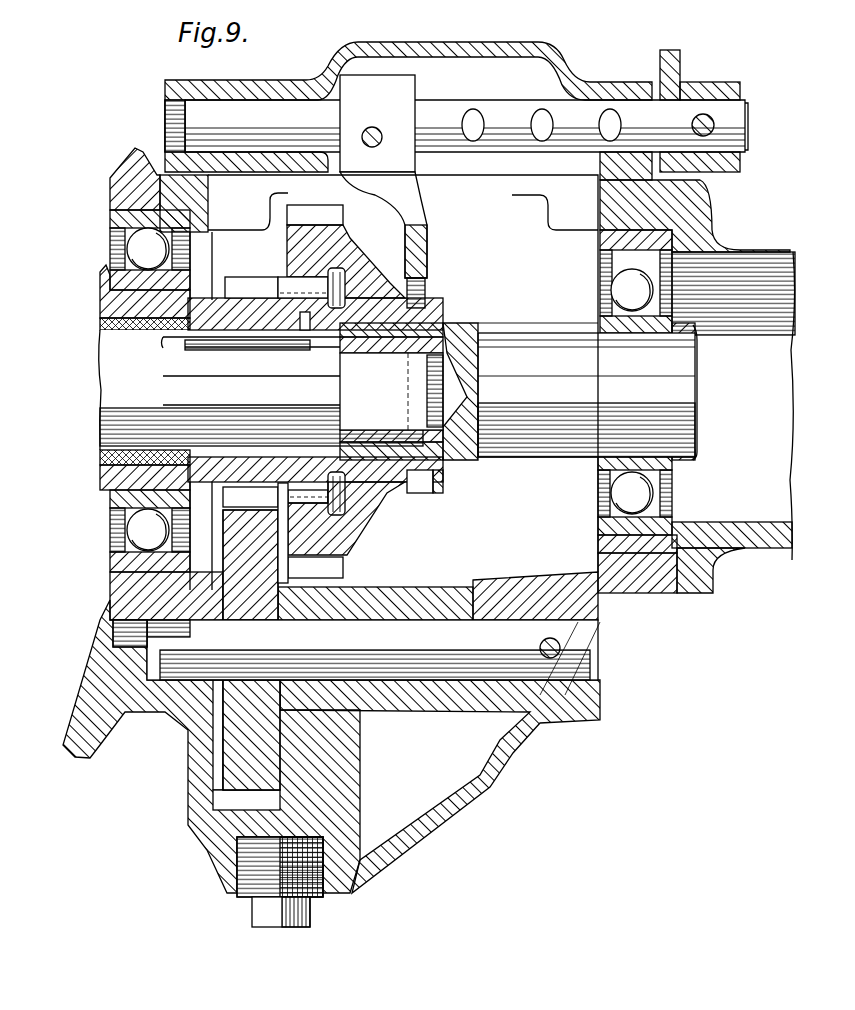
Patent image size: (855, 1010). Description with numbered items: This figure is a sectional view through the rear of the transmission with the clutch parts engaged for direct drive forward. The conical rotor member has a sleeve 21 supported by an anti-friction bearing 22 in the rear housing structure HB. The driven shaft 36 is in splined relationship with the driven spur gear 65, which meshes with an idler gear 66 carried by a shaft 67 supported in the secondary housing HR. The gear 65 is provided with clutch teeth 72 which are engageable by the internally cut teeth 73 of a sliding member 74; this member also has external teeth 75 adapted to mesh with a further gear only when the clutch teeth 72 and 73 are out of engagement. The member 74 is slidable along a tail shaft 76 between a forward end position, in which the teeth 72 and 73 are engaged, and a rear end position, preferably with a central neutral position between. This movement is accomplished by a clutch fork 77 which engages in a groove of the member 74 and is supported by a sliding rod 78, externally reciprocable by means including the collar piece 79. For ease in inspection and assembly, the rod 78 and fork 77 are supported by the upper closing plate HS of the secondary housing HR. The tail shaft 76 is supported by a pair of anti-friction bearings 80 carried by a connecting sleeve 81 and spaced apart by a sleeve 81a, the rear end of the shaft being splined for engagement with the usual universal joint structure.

The upper closing plate HS is at (562, 37).
The rear housing structure HB is at (117, 158).
The secondary housing HR is at (588, 716).
The collar piece 79 is at (682, 58).
The sliding rod 78 is at (678, 113).
The connecting sleeve 81 is at (740, 242).
The sleeve 81a is at (697, 456).
The anti-friction bearings 80 is at (646, 494).
The tail shaft 76 is at (692, 374).
The clutch fork 77 is at (431, 263).
The internally cut teeth 73 is at (357, 258).
The clutch teeth 72 is at (302, 287).
The driven spur gear 65 is at (233, 283).
The sliding member 74 is at (387, 495).
The external teeth 75 is at (334, 550).
The driven shaft 36 is at (108, 375).
The sleeve 21 is at (108, 475).
The anti-friction bearing 22 is at (133, 528).
The shaft 67 is at (588, 644).
The idler gear 66 is at (280, 760).